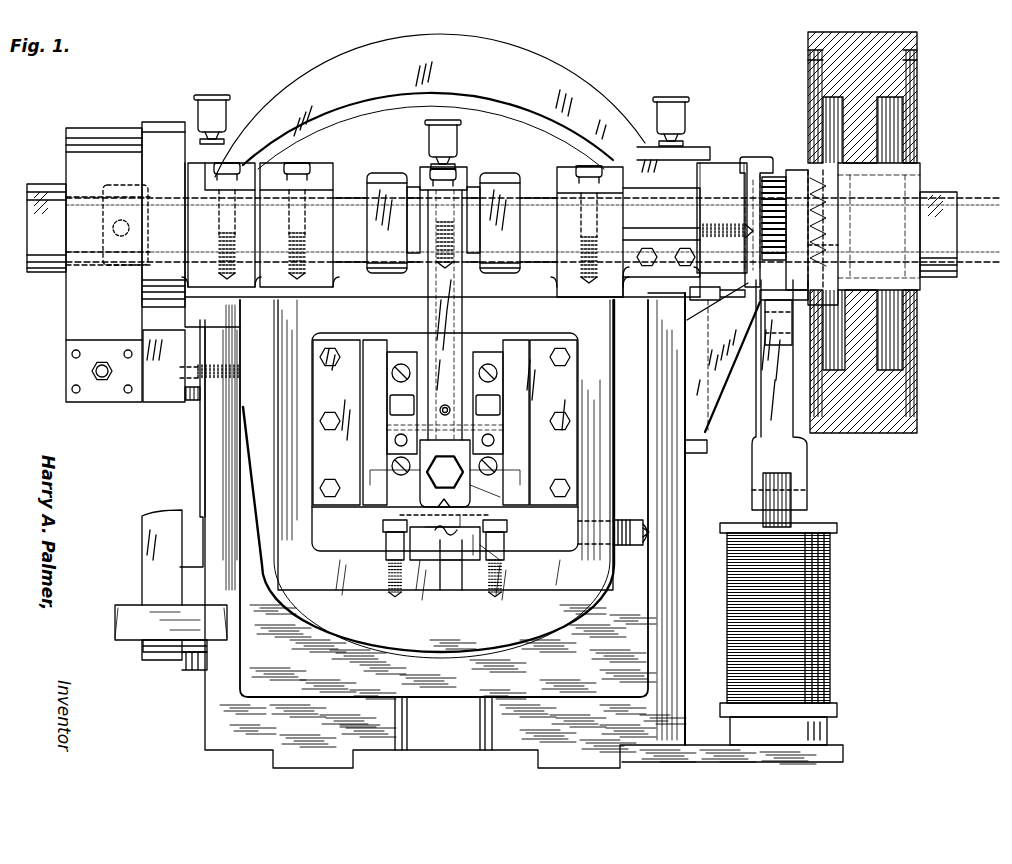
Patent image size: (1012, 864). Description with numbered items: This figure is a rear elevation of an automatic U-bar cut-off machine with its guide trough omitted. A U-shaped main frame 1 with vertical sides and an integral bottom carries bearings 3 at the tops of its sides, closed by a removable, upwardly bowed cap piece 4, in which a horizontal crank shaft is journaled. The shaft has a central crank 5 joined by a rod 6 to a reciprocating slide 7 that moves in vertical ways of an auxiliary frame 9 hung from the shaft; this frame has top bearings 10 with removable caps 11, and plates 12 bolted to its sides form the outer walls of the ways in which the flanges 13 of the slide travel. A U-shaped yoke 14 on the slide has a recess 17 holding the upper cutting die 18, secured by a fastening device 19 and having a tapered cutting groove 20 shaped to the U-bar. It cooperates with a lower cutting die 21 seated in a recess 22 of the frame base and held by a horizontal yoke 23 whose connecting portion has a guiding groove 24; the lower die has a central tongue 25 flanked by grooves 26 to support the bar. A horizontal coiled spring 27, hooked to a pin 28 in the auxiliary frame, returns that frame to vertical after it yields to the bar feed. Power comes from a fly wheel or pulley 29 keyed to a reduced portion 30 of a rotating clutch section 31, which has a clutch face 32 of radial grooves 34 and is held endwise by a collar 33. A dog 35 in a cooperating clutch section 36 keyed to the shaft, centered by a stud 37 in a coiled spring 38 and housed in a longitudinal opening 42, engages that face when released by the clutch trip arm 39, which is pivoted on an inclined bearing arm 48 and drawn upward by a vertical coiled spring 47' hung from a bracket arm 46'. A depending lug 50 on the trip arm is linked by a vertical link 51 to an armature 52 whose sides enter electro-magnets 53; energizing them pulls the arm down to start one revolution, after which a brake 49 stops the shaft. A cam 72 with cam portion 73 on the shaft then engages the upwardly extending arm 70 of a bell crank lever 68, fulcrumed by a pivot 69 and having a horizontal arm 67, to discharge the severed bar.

The main frame 1 is at (213, 442).
The bearings 3 is at (200, 247).
The removable cap piece 4 is at (233, 160).
The crank 5 is at (468, 176).
The rod 6 is at (453, 297).
The reciprocating slide 7 is at (515, 342).
The auxiliary frame 9 is at (285, 448).
The bearings 10 is at (331, 276).
The removable caps 11 is at (330, 172).
The plates 12 is at (345, 340).
The laterally extending flanges 13 is at (650, 280).
The yoke 14 is at (401, 345).
The recess 17 is at (487, 487).
The upper cutting die 18 is at (430, 470).
The fastening device 19 is at (440, 465).
The cutting groove 20 is at (497, 497).
The lower cutting die 21 is at (475, 541).
The recess 22 is at (500, 562).
The yoke 23 is at (397, 535).
The groove 24 is at (440, 517).
The tongue 25 is at (438, 562).
The grooves 26 is at (457, 560).
The coiled spring 27 is at (630, 522).
The pin 28 is at (646, 538).
The fly wheel or pulley 29 is at (873, 73).
The reduced portion 30 is at (897, 193).
The rotating clutch section 31 is at (828, 177).
The clutch face 32 is at (817, 177).
The collar 33 is at (950, 203).
The grooves 34 is at (813, 228).
The dog 35 is at (793, 247).
The cooperating clutch section 36 is at (795, 177).
The stud 37 is at (713, 217).
The coiled spring 38 is at (737, 217).
The clutch trip arm 39 is at (775, 292).
The longitudinal opening 42 is at (748, 293).
The bracket 46' is at (754, 179).
The coiled spring 47' is at (876, 241).
The bearing arm 48 is at (723, 373).
The brake 49 is at (65, 168).
The depending lug or ear 50 is at (777, 333).
The link 51 is at (783, 433).
The armature 52 is at (777, 498).
The electro-magnets 53 is at (833, 563).
The horizontal arm 67 is at (197, 630).
The bell crank lever 68 is at (140, 660).
The bolt or pivot 69 is at (127, 600).
The upwardly extending arm 70 is at (146, 520).
The cam 72 is at (166, 155).
The cam face or portion 73 is at (166, 130).